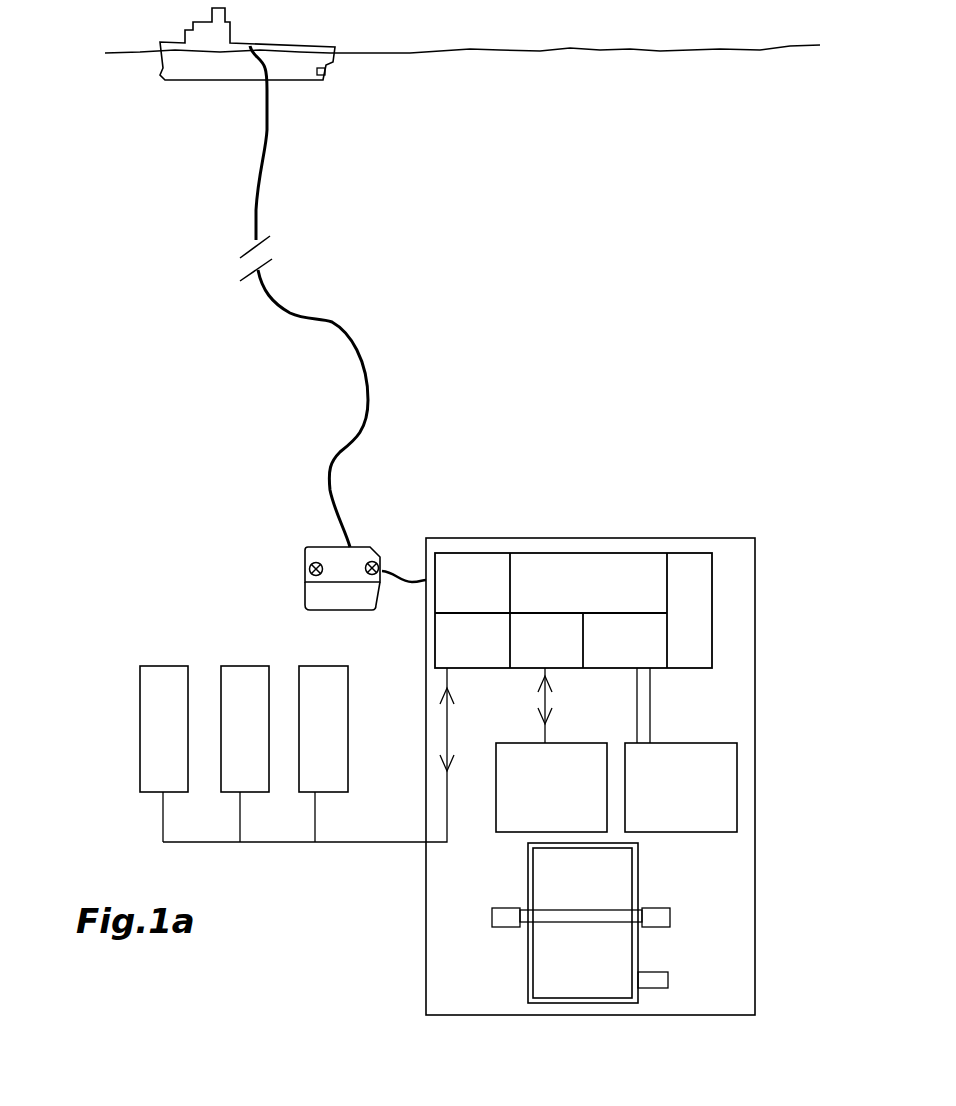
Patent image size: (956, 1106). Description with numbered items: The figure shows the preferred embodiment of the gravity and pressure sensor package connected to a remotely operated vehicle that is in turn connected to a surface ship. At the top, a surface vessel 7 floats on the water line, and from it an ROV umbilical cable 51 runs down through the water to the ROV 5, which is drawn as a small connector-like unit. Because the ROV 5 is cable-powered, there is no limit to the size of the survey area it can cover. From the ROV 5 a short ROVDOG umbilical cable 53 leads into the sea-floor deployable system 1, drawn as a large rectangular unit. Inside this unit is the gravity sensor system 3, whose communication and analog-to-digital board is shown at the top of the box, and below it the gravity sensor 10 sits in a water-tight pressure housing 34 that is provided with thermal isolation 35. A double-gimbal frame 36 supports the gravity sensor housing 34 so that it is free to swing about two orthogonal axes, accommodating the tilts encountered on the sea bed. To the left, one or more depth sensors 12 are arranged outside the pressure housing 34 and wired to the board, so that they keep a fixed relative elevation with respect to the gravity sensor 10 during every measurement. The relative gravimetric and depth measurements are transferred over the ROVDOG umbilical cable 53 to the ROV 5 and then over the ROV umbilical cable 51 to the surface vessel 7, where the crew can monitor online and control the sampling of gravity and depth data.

The sea-floor deployable system 1 is at (596, 677).
The gravity sensor system 3 is at (576, 546).
The water-tight pressure housing 34 is at (576, 546).
The ROV 5 is at (281, 524).
The surface vessel 7 is at (210, 68).
The gravity sensor 10 is at (574, 962).
The depth sensors 12 is at (268, 713).
The thermal isolation 35 is at (555, 1000).
The double-gimbal frame 36 is at (530, 925).
The ROV umbilical cable 51 is at (358, 296).
The ROVDOG umbilical cable 53 is at (461, 512).